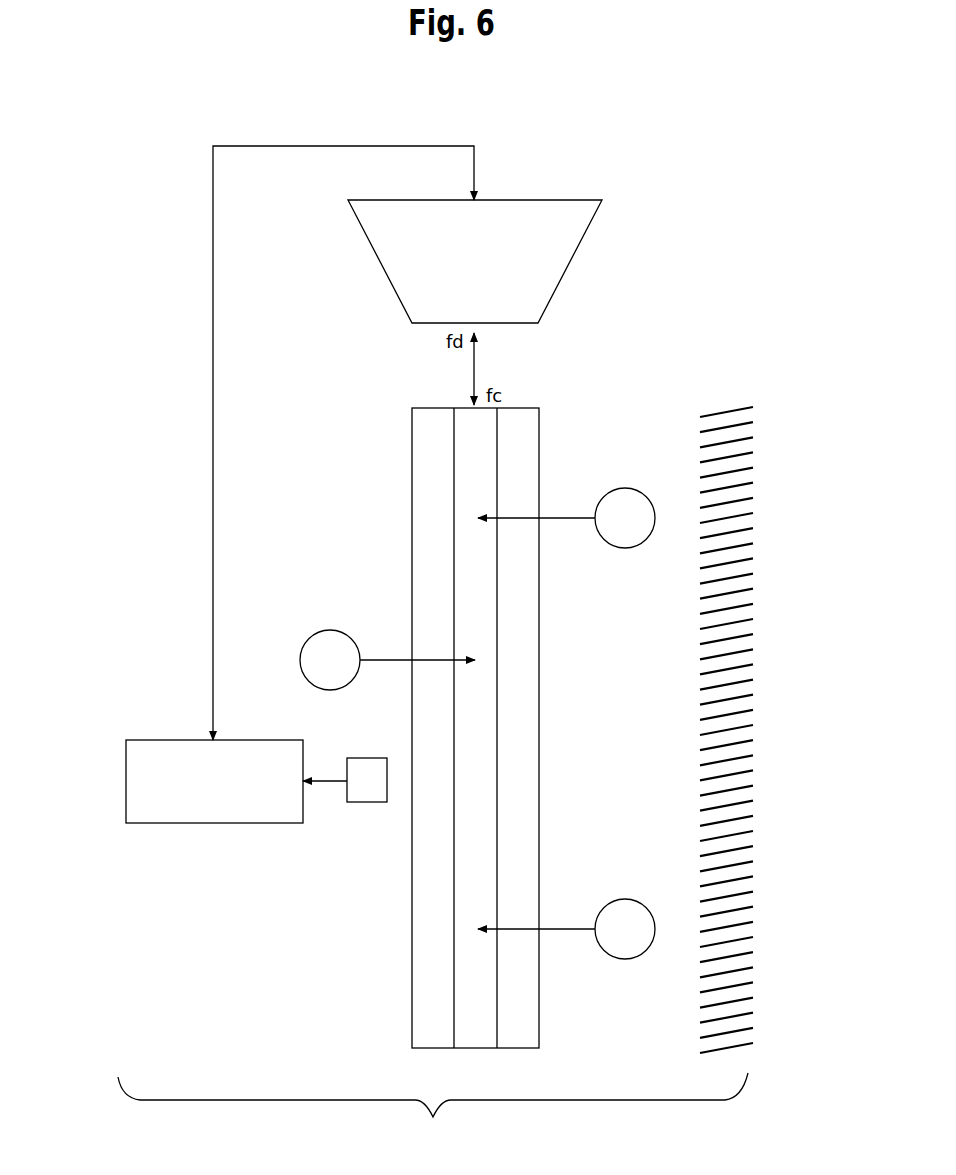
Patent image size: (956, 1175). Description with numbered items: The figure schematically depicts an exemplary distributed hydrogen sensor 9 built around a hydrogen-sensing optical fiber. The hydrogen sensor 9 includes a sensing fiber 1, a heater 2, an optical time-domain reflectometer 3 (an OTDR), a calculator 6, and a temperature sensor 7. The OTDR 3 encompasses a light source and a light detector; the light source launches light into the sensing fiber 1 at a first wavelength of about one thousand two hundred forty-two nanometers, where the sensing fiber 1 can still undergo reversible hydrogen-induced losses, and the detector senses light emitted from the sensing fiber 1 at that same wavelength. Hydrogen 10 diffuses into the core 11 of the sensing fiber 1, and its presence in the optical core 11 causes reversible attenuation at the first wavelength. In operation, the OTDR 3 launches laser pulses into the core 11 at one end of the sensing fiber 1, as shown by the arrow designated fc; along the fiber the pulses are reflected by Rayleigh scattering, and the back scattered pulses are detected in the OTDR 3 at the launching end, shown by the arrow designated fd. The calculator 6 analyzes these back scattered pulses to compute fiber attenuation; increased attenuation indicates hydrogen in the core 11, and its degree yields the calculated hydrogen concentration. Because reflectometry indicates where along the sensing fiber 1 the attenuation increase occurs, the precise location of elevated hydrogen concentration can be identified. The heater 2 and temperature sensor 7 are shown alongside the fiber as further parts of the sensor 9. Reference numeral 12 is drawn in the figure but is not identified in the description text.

The sensing fiber 1 is at (543, 701).
The heater 2 is at (702, 733).
The optical time-domain reflectometer 3 is at (566, 270).
The calculator 6 is at (232, 823).
The temperature sensor 7 is at (375, 802).
The hydrogen sensor 9 is at (433, 1110).
The hydrogen 10 is at (632, 547).
The core 11 is at (482, 690).
The cladding / coating layer 12 is at (518, 785).